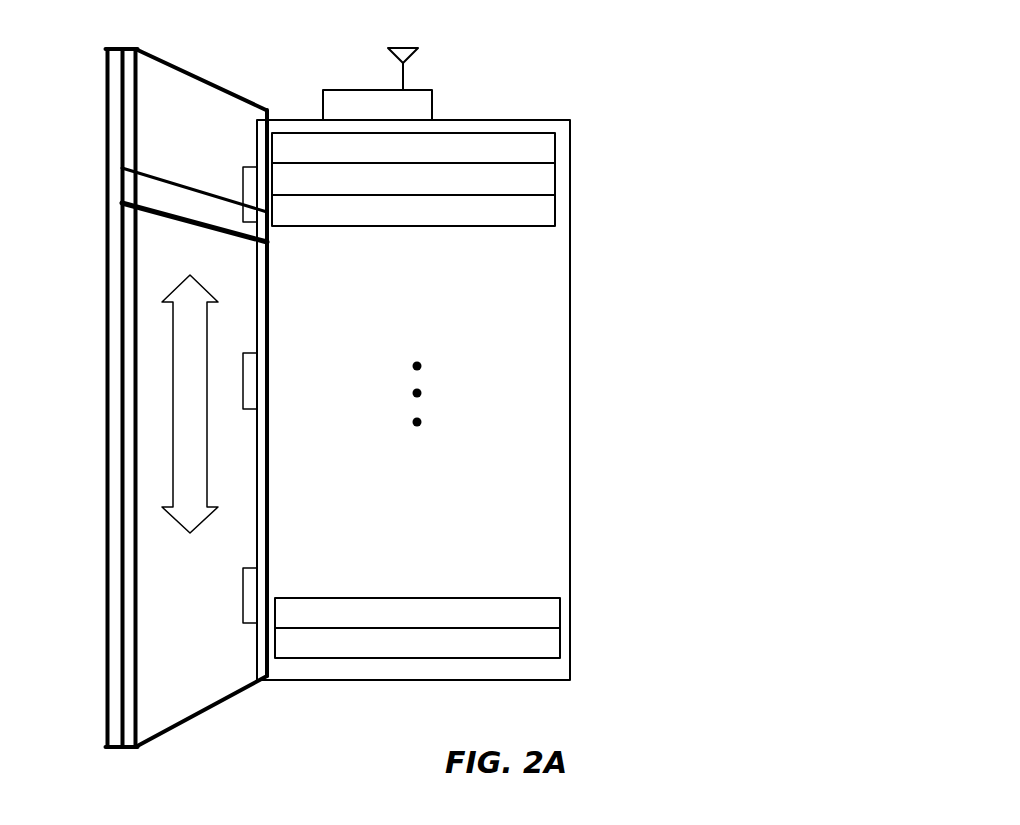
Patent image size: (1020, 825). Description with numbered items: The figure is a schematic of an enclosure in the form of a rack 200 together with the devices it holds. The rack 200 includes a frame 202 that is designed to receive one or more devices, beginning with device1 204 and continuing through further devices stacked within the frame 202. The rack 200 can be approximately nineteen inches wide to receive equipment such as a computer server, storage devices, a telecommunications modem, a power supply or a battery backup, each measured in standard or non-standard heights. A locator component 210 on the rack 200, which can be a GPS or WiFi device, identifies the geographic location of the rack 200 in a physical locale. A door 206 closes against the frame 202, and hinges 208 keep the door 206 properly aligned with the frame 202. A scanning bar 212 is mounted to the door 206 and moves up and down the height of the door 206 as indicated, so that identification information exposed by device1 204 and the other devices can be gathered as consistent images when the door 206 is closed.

The rack 200 is at (348, 387).
The frame 202 is at (447, 361).
The device1 204 is at (455, 385).
The door 206 is at (189, 398).
The hinges 208 is at (287, 395).
The locator component 210 is at (418, 81).
The scanning bar 212 is at (157, 181).